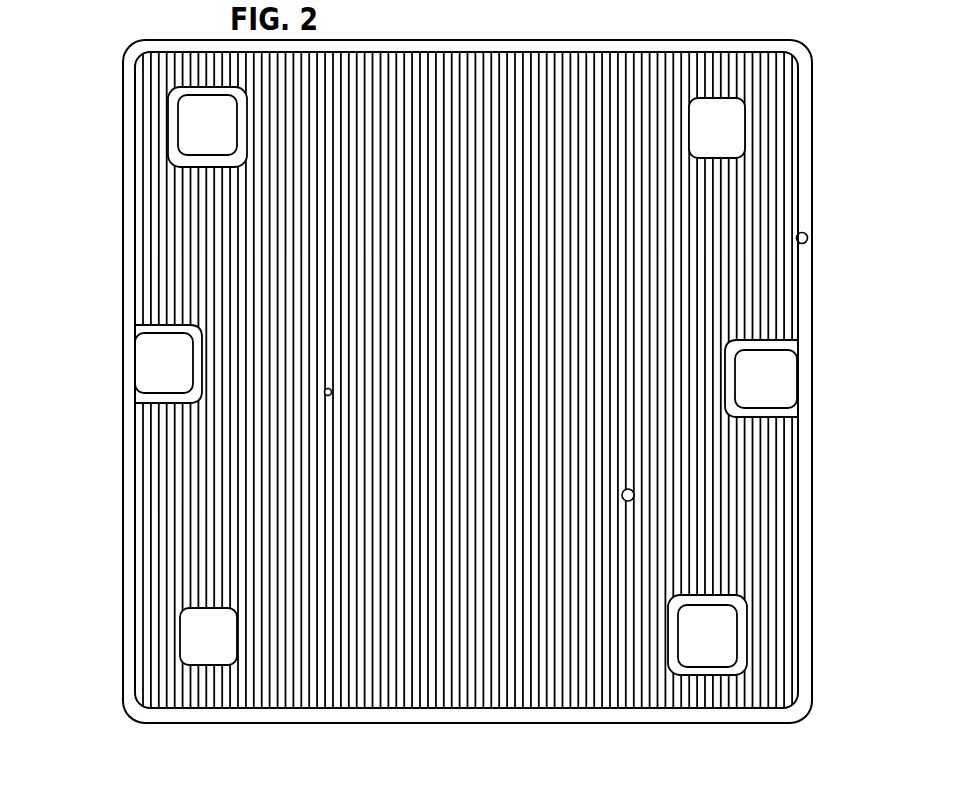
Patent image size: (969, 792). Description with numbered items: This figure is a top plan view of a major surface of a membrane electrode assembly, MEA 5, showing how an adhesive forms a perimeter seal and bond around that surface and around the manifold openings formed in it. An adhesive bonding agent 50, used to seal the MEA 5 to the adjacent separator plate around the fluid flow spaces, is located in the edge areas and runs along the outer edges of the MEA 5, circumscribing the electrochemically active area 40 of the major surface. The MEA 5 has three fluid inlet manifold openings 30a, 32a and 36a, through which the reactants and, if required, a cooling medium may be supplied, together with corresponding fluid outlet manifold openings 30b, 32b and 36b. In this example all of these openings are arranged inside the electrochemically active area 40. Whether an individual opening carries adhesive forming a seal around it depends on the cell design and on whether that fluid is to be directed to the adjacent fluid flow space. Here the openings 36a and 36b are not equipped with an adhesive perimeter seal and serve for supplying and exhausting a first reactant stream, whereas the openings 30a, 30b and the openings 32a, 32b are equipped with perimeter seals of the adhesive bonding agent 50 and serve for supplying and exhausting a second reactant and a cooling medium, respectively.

The MEA 5 is at (104, 56).
The fluid inlet manifold opening 30a is at (718, 628).
The fluid outlet manifold opening 30b is at (187, 121).
The fluid inlet manifold opening 32a is at (770, 380).
The fluid outlet manifold opening 32b is at (146, 368).
The fluid inlet manifold opening 36a is at (736, 128).
The fluid outlet manifold opening 36b is at (213, 652).
The electrochemically active area 40 is at (634, 492).
The adhesive bonding agent 50 is at (807, 236).